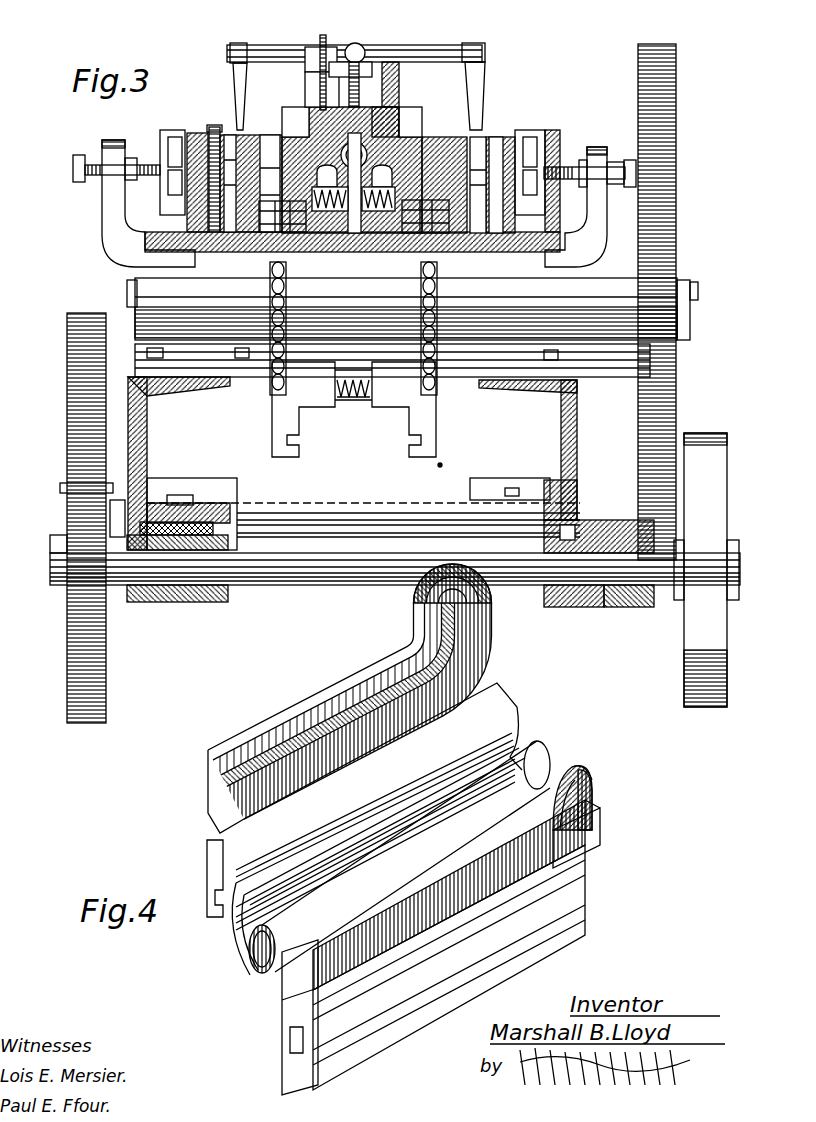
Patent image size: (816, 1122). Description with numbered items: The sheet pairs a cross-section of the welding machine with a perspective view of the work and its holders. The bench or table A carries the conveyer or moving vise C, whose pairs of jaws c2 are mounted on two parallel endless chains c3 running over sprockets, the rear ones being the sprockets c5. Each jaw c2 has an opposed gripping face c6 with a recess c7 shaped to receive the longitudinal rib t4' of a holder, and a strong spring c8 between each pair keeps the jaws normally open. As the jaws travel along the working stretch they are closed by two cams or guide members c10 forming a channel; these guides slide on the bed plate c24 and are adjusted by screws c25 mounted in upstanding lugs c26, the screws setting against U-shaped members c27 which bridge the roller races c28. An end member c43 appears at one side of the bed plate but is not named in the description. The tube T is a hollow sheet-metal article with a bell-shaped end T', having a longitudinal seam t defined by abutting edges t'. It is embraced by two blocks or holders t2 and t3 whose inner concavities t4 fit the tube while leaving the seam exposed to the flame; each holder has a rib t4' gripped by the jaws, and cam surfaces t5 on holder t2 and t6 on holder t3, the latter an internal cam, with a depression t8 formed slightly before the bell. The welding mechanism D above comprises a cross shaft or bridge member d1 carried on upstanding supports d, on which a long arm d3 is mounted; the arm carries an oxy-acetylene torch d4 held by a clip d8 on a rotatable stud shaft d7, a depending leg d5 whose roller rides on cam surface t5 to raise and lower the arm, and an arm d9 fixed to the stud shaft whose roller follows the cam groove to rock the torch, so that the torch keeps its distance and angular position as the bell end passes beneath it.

In FIG. 3, the bench or table A is at (148, 448).
In FIG. 3, the carriage C is at (482, 135).
In FIG. 3, the welding mechanism D is at (365, 45).
In FIG. 4, the tube T is at (386, 870).
In FIG. 3, the bell-shaped end T' is at (352, 189).
In FIG. 4, the bell-shaped end T' is at (572, 779).
In FIG. 3, the jaws c2 is at (290, 140).
In FIG. 3, the endless chains c3 is at (290, 233).
In FIG. 3, the rear sprockets c5 is at (410, 350).
In FIG. 3, the gripping faces c6 is at (218, 125).
In FIG. 3, the recesses c7 is at (352, 400).
In FIG. 3, the spring c8 is at (340, 405).
In FIG. 3, the guide members c10 is at (195, 135).
In FIG. 3, the bed plate c24 is at (230, 262).
In FIG. 3, the adjusting screws c25 is at (75, 168).
In FIG. 3, the upstanding lugs c26 is at (120, 180).
In FIG. 3, the U-shaped members c27 is at (160, 140).
In FIG. 3, the roller races c28 is at (168, 188).
In FIG. 3, the drum end cap c43 is at (127, 288).
In FIG. 3, the support arm d is at (238, 95).
In FIG. 3, the cross shaft or bridge member d1 is at (355, 62).
In FIG. 3, the long arm d3 is at (323, 35).
In FIG. 3, the oxy-acetylene torch d4 is at (318, 45).
In FIG. 3, the depending member or leg d5 is at (245, 45).
In FIG. 3, the stud shaft d7 is at (355, 62).
In FIG. 3, the clip d8 is at (392, 70).
In FIG. 3, the arm d9 is at (478, 43).
In FIG. 3, the longitudinal seam t is at (327, 136).
In FIG. 4, the longitudinal seam t is at (378, 866).
In FIG. 4, the edges t' is at (380, 859).
In FIG. 3, the holder t2 is at (320, 160).
In FIG. 4, the holder t2 is at (600, 850).
In FIG. 3, the holder t3 is at (420, 130).
In FIG. 4, the holder t3 is at (207, 860).
In FIG. 3, the inner recesses or concavities t4 is at (365, 167).
In FIG. 4, the inner recesses or concavities t4 is at (410, 886).
In FIG. 3, the longitudinal rib t4' is at (277, 111).
In FIG. 4, the longitudinal rib t4' is at (234, 940).
In FIG. 4, the cam surface t5 is at (590, 772).
In FIG. 3, the cam surface t6 is at (395, 90).
In FIG. 4, the cam surface t6 is at (230, 735).
In FIG. 4, the depression t8 is at (425, 640).